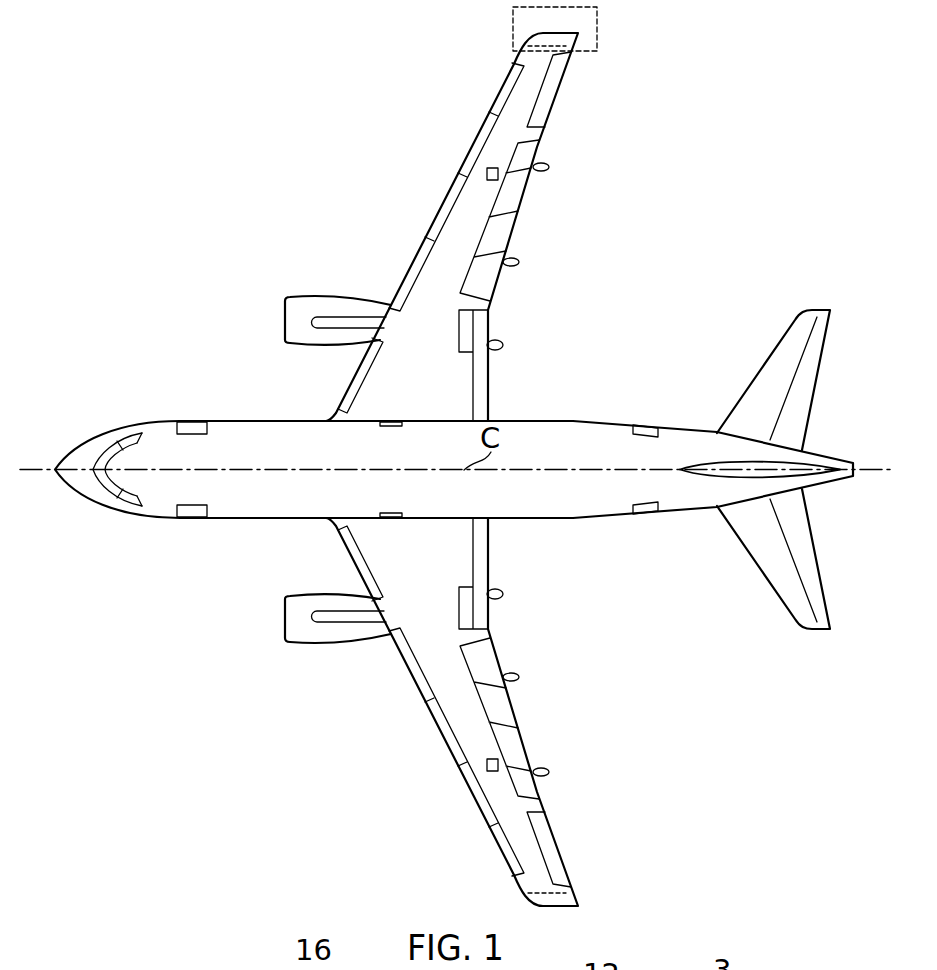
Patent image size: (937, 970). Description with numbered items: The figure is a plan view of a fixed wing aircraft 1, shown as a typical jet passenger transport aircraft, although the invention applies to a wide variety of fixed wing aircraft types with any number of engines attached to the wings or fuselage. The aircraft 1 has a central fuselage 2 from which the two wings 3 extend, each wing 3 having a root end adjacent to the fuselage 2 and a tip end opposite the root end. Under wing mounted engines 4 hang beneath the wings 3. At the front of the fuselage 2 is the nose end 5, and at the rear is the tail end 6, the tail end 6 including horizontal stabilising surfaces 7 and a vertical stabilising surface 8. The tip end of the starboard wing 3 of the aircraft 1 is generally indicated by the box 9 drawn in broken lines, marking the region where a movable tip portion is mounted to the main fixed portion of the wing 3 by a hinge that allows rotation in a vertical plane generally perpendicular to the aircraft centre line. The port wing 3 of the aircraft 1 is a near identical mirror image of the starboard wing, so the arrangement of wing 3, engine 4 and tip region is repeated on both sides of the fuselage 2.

The aircraft 1 is at (463, 454).
The fuselage 2 is at (463, 469).
The wings 3 is at (493, 454).
The under wing mounted engines 4 is at (296, 316).
The nose end 5 is at (53, 497).
The tail end 6 is at (742, 469).
The horizontal stabilising surfaces 7 is at (765, 376).
The vertical stabilising surface 8 is at (743, 473).
The box 9 is at (597, 33).